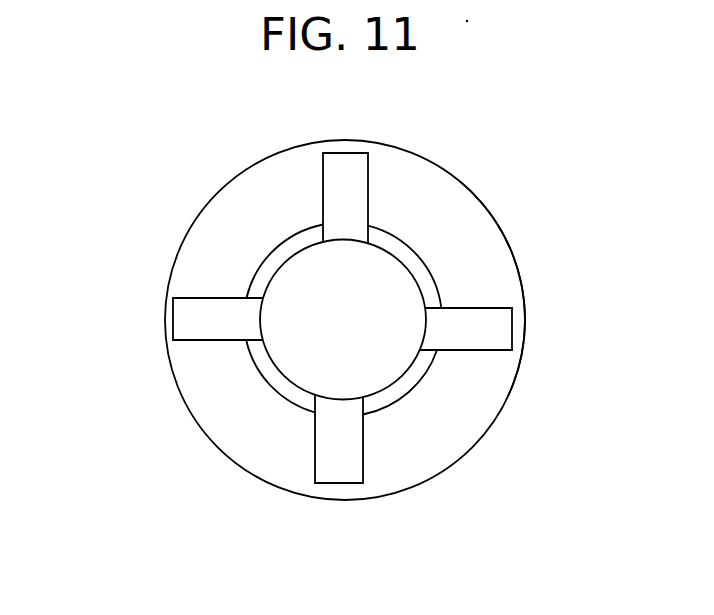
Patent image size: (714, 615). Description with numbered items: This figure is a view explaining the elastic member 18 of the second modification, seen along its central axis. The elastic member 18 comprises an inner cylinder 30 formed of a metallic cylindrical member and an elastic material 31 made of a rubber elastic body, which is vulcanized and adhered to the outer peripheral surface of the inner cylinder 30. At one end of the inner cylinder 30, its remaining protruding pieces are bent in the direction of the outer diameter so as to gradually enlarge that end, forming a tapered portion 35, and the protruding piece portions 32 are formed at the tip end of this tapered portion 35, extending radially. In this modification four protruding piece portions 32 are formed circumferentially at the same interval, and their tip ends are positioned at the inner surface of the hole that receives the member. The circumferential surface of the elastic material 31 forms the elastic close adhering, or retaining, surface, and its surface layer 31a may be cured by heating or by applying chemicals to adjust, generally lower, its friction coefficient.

The elastic member 18 is at (175, 235).
The inner cylinder 30 is at (421, 252).
The elastic material 31 is at (458, 433).
The surface layer 31a is at (510, 397).
The protruding piece portions 32 is at (341, 172).
The tapered portion 35 is at (428, 285).